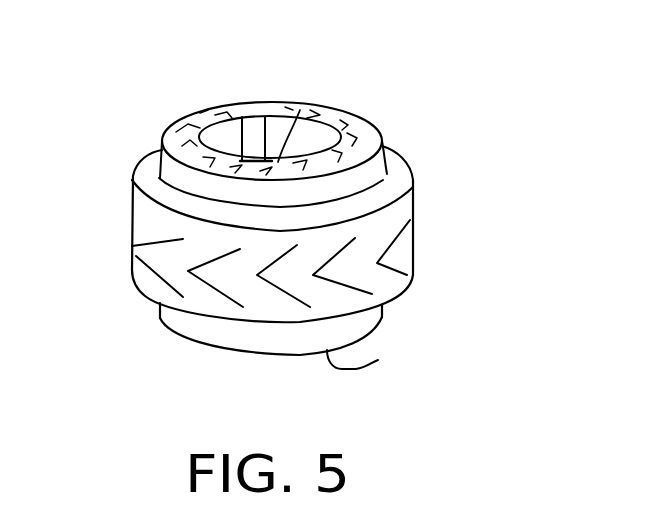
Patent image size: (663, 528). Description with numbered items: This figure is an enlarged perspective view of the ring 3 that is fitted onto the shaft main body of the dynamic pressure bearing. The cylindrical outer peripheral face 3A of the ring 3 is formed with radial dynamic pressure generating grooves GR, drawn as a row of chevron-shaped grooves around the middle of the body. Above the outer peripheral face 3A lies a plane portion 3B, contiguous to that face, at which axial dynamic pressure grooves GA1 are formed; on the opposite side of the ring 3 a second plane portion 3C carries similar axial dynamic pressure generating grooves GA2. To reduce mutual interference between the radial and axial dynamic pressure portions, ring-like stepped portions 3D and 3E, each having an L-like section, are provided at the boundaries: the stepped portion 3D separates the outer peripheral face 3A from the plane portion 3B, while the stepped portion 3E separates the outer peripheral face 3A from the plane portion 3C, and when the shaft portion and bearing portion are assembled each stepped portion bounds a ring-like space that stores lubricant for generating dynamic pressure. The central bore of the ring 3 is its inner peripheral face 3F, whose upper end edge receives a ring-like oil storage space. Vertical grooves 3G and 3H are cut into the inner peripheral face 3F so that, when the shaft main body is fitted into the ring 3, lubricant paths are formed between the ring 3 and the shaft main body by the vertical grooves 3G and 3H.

The ring 3 is at (414, 123).
The outer peripheral face 3A is at (413, 262).
The plane portion 3B is at (170, 127).
The plane portion 3C is at (259, 356).
The ring-like stepped portion 3D is at (144, 174).
The ring-like stepped portion 3E is at (158, 318).
The inner peripheral face 3F is at (325, 143).
The vertical groove 3G is at (252, 133).
The vertical groove 3H is at (300, 110).
The axial dynamic pressure grooves GA1 is at (360, 140).
The axial dynamic pressure generating grooves GA2 is at (378, 360).
The radial dynamic pressure generating grooves GR is at (132, 248).